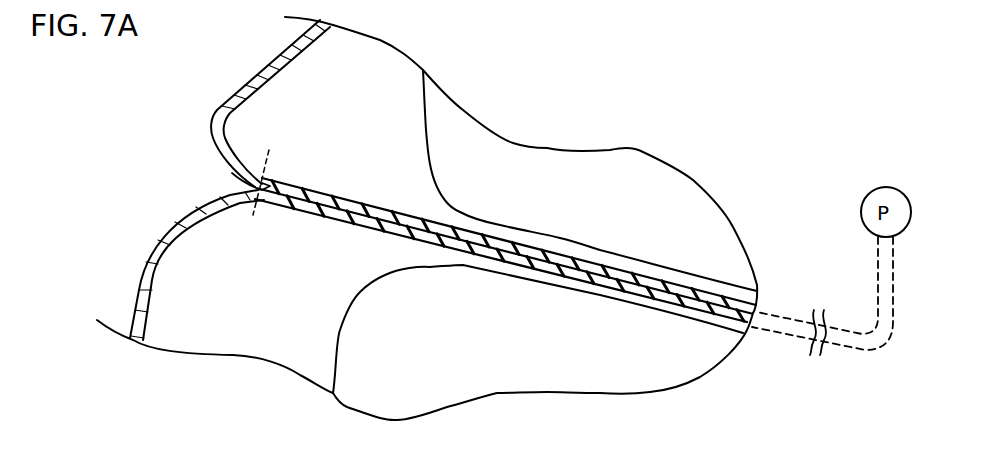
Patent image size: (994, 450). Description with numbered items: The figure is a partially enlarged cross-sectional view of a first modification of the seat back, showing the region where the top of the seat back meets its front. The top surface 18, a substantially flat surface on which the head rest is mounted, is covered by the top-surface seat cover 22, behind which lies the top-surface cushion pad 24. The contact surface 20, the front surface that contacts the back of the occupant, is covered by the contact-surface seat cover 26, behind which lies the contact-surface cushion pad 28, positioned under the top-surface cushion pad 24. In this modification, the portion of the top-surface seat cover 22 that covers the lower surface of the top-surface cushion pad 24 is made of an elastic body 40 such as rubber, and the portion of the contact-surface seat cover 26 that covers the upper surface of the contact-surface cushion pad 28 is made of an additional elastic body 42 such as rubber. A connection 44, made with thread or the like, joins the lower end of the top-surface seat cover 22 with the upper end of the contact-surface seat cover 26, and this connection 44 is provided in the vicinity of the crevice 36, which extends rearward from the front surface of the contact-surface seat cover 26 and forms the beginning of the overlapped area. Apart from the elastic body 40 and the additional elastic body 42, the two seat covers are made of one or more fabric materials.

The top surface 18 is at (292, 42).
The top-surface seat cover 22 is at (243, 82).
The crevice 36 is at (244, 184).
The connection 44 is at (269, 152).
The contact-surface seat cover 26 is at (138, 270).
The contact surface 20 is at (134, 296).
The top-surface cushion pad 24 is at (548, 187).
The contact-surface cushion pad 28 is at (497, 370).
The elastic body 40 is at (655, 285).
The additional elastic body 42 is at (657, 305).